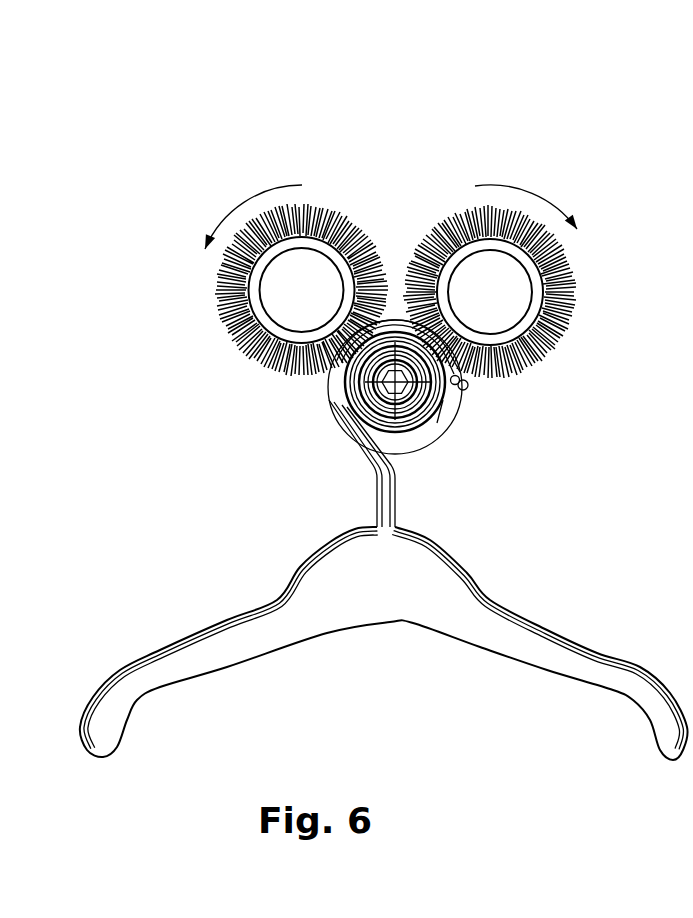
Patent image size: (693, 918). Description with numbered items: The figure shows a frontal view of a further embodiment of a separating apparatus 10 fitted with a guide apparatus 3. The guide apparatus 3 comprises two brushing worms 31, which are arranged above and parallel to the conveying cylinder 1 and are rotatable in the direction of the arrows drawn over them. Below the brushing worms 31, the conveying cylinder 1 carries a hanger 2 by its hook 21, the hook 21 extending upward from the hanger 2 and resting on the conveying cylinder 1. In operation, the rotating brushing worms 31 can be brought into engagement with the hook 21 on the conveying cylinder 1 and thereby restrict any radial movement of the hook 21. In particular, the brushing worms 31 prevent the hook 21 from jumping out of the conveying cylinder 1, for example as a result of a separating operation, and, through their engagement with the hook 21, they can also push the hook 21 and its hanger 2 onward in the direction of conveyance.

The separating apparatus 10 is at (549, 134).
The guide apparatus 3 is at (310, 115).
The brushing worm 31 is at (212, 316).
The conveying cylinder 1 is at (300, 445).
The hook 21 is at (400, 500).
The hanger 2 is at (470, 614).